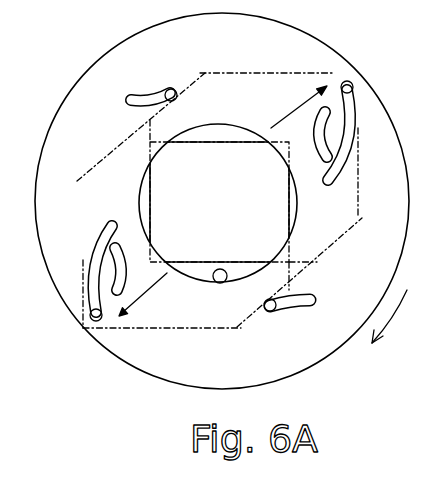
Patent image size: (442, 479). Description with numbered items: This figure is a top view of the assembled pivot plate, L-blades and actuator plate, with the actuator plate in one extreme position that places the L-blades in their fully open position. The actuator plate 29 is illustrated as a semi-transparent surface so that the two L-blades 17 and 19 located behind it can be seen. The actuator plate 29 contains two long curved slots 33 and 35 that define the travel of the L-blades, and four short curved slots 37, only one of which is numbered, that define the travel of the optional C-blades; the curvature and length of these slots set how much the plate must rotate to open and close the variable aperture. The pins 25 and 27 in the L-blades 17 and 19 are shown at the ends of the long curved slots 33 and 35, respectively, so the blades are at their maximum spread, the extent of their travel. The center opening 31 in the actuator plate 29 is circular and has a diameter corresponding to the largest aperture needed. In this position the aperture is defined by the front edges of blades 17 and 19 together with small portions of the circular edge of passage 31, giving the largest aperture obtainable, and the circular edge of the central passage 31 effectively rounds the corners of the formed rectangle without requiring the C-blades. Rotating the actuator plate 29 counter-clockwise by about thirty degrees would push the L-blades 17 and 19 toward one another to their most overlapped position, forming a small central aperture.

The L-blade 17 is at (190, 262).
The L-blade 19 is at (288, 182).
The pin 25 is at (93, 322).
The pin 27 is at (377, 62).
The actuator plate 29 is at (70, 91).
The center opening 31 is at (221, 284).
The long curved slot 33 is at (93, 255).
The long curved slot 35 is at (358, 100).
The short curved slot 37 is at (150, 92).